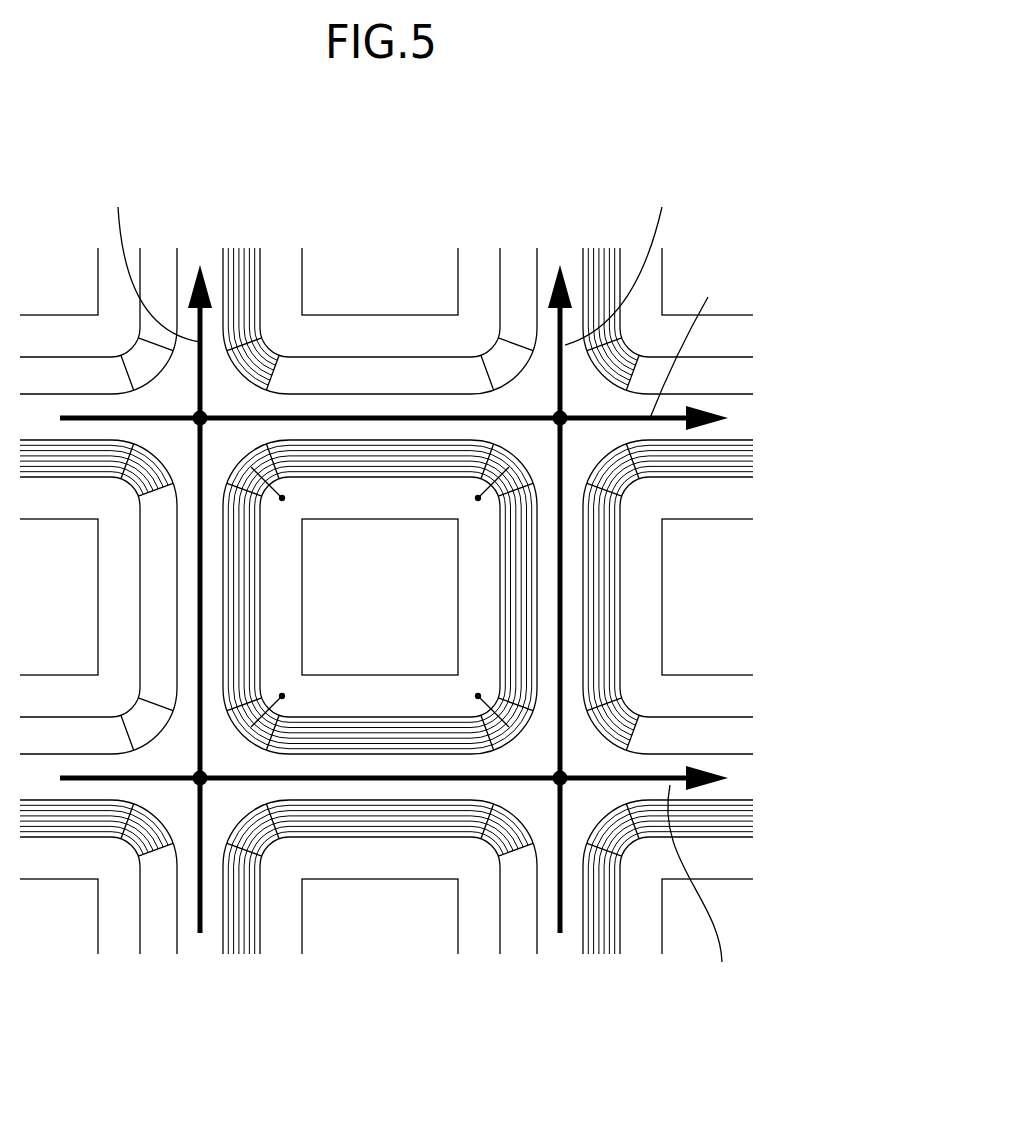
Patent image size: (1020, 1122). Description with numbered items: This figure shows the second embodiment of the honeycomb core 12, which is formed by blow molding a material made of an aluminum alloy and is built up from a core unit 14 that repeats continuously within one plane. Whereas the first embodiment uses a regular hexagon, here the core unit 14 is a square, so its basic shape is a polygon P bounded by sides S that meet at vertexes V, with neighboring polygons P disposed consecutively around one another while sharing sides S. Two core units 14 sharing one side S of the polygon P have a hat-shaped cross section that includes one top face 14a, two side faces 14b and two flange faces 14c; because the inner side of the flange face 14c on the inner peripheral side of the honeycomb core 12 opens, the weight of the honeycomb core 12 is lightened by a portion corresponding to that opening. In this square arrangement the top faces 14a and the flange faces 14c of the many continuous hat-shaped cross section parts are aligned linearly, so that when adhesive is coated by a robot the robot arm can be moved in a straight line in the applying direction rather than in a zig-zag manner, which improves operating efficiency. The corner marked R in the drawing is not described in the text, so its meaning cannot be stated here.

The honeycomb core 12 is at (432, 223).
The core unit 14 is at (187, 641).
The top face 14a is at (212, 548).
The side face 14b is at (427, 463).
The flange face 14c is at (477, 648).
The polygon P is at (437, 398).
The side S is at (366, 415).
The corner radius R is at (246, 457).
The vertex V is at (197, 421).